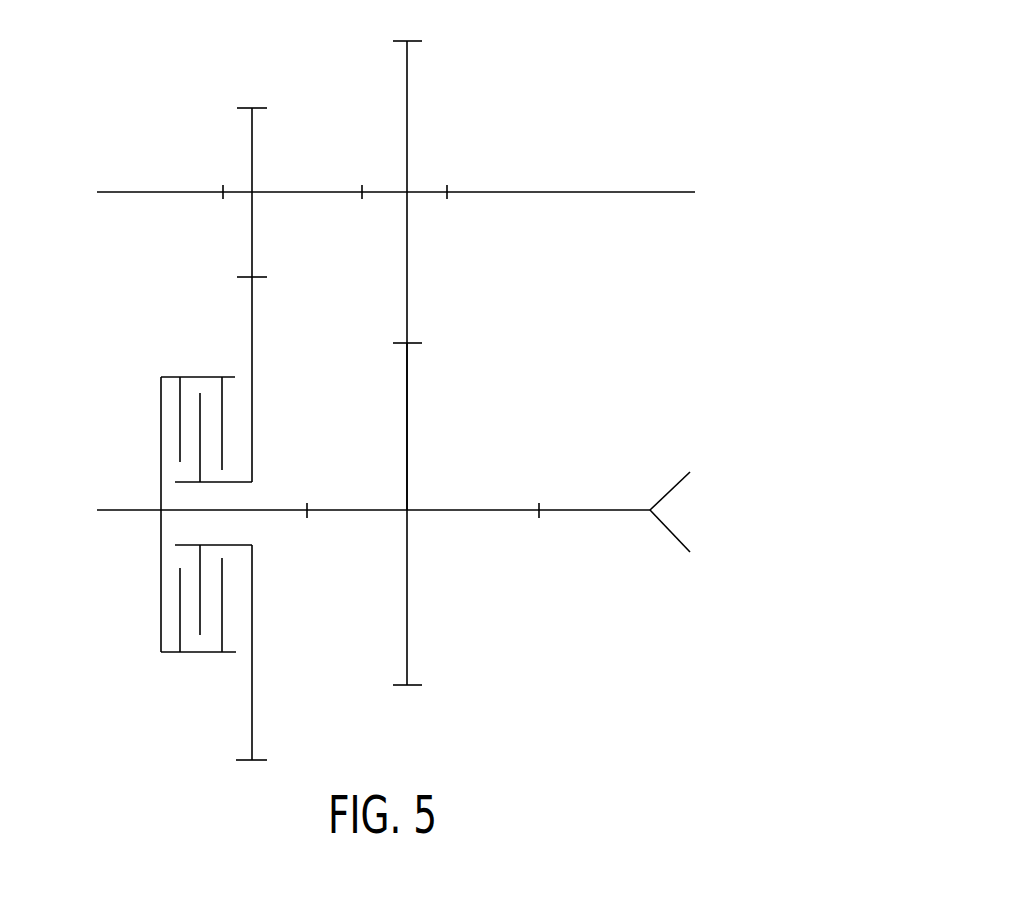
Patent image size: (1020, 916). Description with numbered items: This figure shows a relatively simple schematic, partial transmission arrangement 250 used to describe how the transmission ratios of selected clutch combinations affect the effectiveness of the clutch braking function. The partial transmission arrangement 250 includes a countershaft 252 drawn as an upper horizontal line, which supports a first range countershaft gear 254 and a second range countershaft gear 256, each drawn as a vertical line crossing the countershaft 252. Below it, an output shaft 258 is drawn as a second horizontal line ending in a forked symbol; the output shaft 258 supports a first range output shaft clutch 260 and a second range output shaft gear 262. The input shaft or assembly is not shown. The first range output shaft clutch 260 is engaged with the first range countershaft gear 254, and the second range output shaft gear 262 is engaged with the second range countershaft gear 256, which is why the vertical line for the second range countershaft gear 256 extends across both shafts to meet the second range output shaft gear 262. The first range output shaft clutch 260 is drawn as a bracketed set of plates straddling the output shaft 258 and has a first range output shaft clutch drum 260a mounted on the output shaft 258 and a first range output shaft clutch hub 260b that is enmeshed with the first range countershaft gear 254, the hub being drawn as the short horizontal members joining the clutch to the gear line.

The partial transmission arrangement 250 is at (171, 60).
The countershaft 252 is at (550, 192).
The first range countershaft gear 254 is at (252, 144).
The second range countershaft gear 256 is at (408, 88).
The output shaft 258 is at (593, 510).
The first range output shaft clutch 260 is at (202, 480).
The first range output shaft clutch drum 260a is at (198, 377).
The first range output shaft clutch hub 260b is at (233, 483).
The second range output shaft gear 262 is at (408, 410).